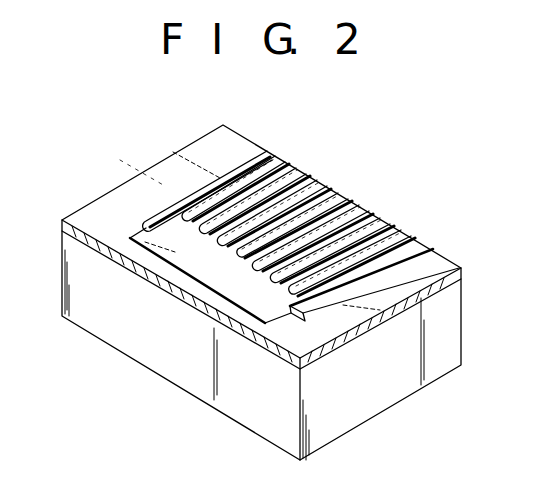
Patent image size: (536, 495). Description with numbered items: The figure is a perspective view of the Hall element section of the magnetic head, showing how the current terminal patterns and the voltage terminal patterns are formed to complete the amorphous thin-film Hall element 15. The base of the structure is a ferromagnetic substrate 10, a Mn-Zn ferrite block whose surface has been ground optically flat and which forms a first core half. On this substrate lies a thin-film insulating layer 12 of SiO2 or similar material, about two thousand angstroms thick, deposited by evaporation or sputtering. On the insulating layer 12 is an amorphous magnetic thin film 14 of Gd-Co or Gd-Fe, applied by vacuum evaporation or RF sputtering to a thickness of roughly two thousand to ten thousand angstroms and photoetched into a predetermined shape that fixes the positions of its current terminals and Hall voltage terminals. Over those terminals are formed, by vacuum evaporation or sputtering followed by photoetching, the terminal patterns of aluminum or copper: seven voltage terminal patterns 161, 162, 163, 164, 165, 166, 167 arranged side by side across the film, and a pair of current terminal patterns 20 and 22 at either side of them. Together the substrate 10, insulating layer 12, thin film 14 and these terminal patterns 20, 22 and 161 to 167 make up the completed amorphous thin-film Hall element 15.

The ferromagnetic substrate 10 is at (397, 391).
The thin-film insulating layer 12 is at (92, 200).
The amorphous magnetic thin film 14 is at (200, 271).
The amorphous thin-film Hall element 15 is at (172, 144).
The current terminal pattern 20 is at (255, 145).
The current terminal pattern 22 is at (434, 248).
The voltage terminal pattern 161 is at (280, 160).
The voltage terminal pattern 162 is at (302, 172).
The voltage terminal pattern 163 is at (323, 182).
The voltage terminal pattern 164 is at (345, 198).
The voltage terminal pattern 165 is at (366, 211).
The voltage terminal pattern 166 is at (385, 220).
The voltage terminal pattern 167 is at (401, 228).